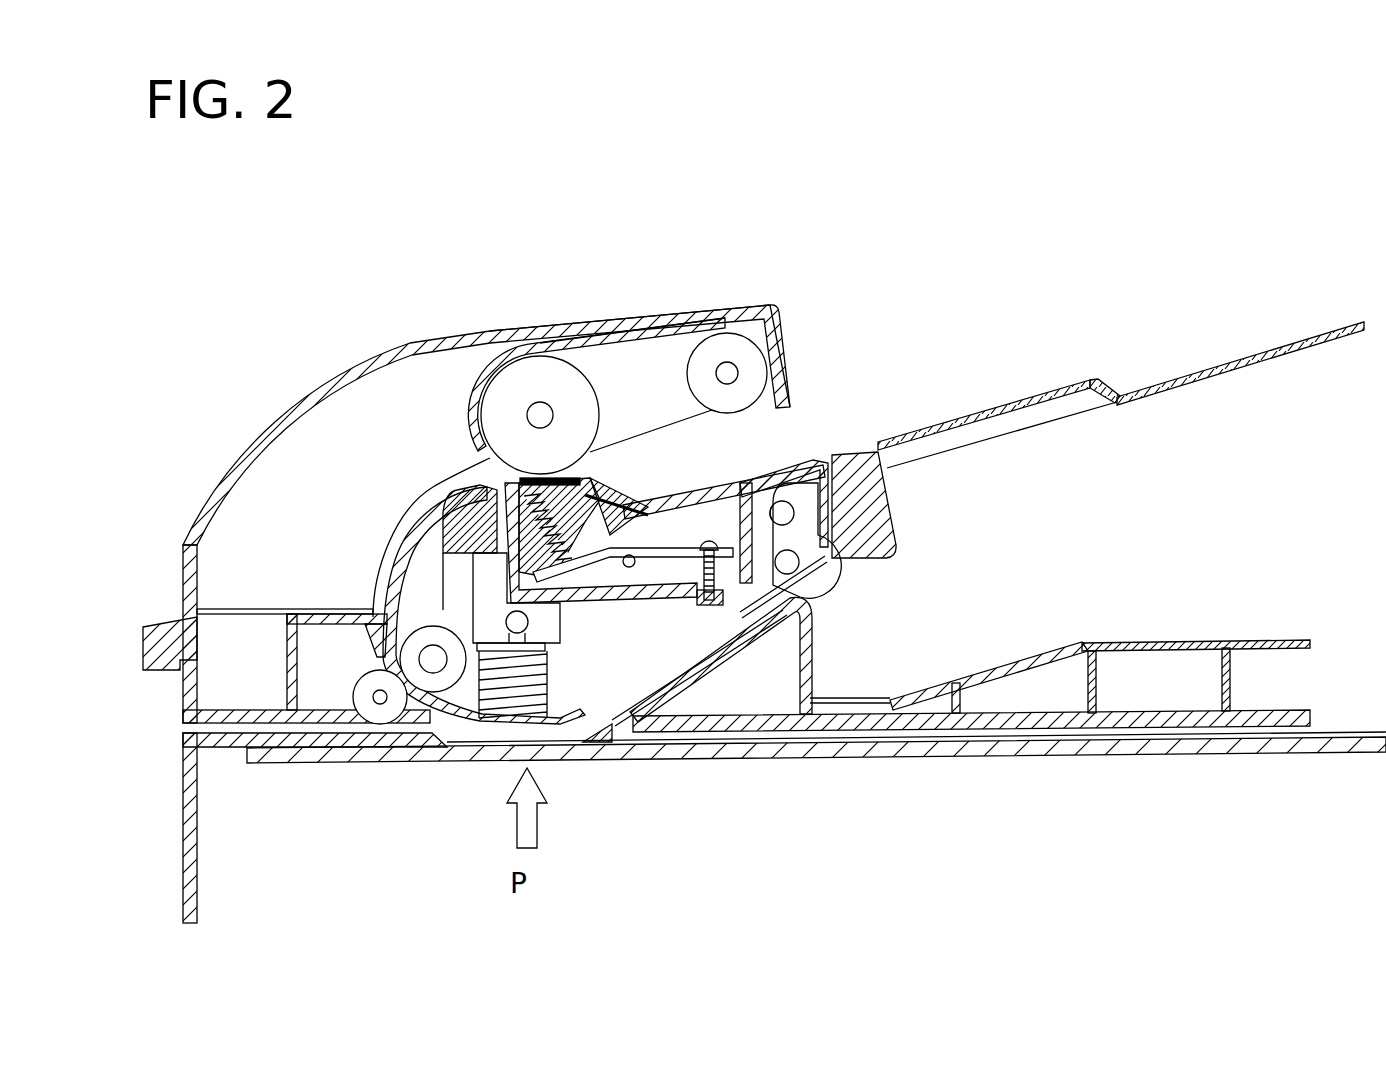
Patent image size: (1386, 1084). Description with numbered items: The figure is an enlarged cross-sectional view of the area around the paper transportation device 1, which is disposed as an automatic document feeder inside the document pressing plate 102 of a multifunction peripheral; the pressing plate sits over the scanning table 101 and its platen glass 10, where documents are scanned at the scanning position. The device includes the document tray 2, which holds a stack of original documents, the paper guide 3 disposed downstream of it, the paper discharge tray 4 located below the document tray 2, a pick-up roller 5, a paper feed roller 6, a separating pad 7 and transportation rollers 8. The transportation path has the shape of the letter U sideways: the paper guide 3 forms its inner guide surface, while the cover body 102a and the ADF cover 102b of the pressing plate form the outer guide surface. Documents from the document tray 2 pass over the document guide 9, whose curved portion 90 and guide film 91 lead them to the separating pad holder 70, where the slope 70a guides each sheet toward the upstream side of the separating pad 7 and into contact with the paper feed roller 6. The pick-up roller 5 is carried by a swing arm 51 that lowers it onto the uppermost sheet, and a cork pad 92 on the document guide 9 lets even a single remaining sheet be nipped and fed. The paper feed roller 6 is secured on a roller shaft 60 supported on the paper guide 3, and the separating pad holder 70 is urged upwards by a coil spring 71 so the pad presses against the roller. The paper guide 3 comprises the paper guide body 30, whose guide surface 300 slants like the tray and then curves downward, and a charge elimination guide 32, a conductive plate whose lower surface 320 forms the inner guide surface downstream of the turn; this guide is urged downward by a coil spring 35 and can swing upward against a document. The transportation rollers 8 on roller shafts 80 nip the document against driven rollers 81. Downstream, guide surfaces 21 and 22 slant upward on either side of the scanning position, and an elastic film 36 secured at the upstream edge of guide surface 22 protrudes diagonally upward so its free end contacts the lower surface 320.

The paper transportation device 1 is at (820, 390).
The document tray 2 is at (1184, 378).
The paper guide 3 is at (445, 588).
The paper discharge tray 4 is at (1160, 640).
The pick-up roller 5 is at (745, 408).
The paper feed roller 6 is at (477, 397).
The separating pad 7 is at (540, 415).
The transportation rollers 8 is at (383, 664).
The document guide 9 is at (703, 478).
The platen glass 10 is at (653, 760).
The guide surface 21 is at (372, 647).
The guide surface 22 is at (707, 663).
The paper guide body 30 is at (440, 510).
The charge elimination guide 32 is at (628, 676).
The coil spring 35 is at (550, 680).
The elastic film 36 is at (673, 655).
The swing arm 51 is at (640, 380).
The roller shaft 60 is at (541, 403).
The separating pad holder 70 is at (516, 478).
The slope 70a is at (616, 462).
The coil spring 71 is at (550, 528).
The roller shafts 80 is at (443, 640).
The driven rollers 81 is at (352, 698).
The curved portion 90 is at (656, 505).
The guide film 91 is at (643, 490).
The cork pad 92 is at (730, 492).
The scanning table 101 is at (212, 840).
The document pressing plate 102 is at (338, 338).
The cover body 102a is at (170, 620).
The ADF cover 102b is at (476, 326).
The guide surface 300 is at (388, 566).
The lower surface 320 is at (584, 733).